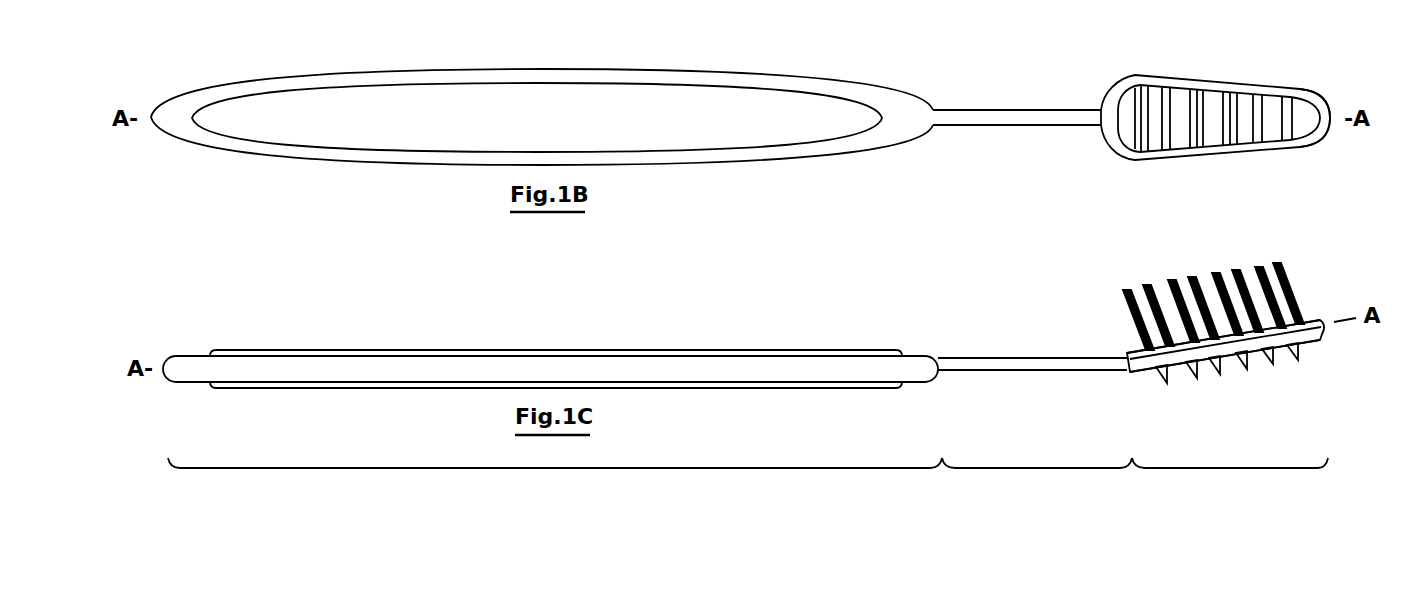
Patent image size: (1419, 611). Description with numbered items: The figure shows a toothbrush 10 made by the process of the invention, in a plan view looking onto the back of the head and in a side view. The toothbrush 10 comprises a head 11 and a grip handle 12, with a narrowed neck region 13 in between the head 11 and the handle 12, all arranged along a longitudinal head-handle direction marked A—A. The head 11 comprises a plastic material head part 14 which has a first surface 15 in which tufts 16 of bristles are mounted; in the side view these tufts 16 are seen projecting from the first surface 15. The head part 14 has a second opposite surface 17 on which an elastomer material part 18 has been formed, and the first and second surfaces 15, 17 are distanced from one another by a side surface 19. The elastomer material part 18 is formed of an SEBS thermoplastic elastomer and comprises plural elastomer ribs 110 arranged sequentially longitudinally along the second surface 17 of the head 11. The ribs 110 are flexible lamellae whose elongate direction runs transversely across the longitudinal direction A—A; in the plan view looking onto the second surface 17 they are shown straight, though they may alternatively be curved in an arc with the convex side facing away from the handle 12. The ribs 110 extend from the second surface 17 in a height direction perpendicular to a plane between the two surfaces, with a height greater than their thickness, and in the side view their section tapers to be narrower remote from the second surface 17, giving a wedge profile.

In FIG. 1B, the toothbrush 10 is at (282, 73).
In FIG. 1C, the toothbrush 10 is at (300, 337).
In FIG. 1C, the head 11 is at (1225, 468).
In FIG. 1C, the grip handle 12 is at (573, 468).
In FIG. 1C, the narrowed neck region 13 is at (1037, 468).
In FIG. 1B, the plastic material head part 14 is at (1170, 78).
In FIG. 1C, the first surface 15 is at (1310, 320).
In FIG. 1C, the tufts of bristles 16 is at (1130, 323).
In FIG. 1B, the second surface 17 is at (1305, 118).
In FIG. 1B, the elastomer material part 18 is at (1137, 78).
In FIG. 1C, the elastomer material part 18 is at (1305, 343).
In FIG. 1C, the side surface 19 is at (1325, 334).
In FIG. 1B, the elastomer ribs 110 is at (1135, 110).
In FIG. 1C, the elastomer ribs 110 is at (1182, 368).